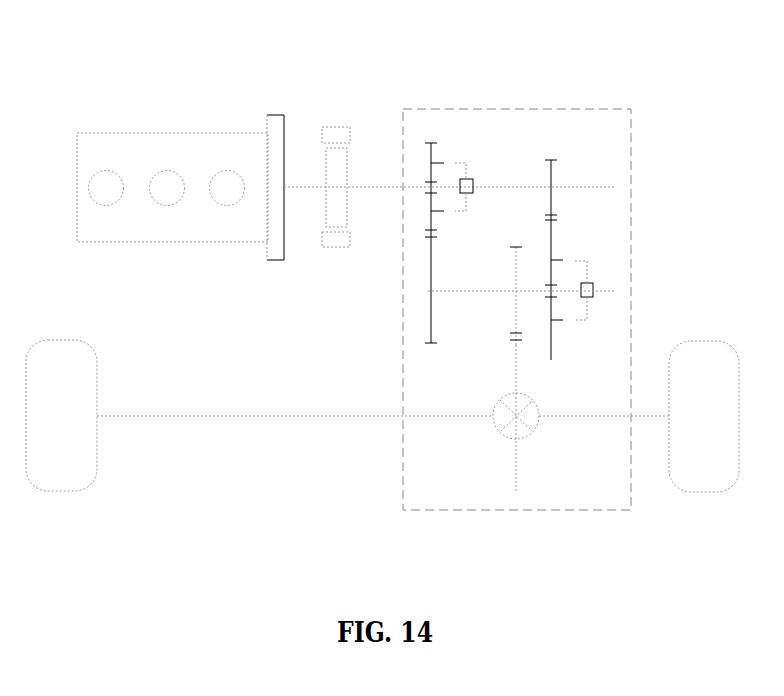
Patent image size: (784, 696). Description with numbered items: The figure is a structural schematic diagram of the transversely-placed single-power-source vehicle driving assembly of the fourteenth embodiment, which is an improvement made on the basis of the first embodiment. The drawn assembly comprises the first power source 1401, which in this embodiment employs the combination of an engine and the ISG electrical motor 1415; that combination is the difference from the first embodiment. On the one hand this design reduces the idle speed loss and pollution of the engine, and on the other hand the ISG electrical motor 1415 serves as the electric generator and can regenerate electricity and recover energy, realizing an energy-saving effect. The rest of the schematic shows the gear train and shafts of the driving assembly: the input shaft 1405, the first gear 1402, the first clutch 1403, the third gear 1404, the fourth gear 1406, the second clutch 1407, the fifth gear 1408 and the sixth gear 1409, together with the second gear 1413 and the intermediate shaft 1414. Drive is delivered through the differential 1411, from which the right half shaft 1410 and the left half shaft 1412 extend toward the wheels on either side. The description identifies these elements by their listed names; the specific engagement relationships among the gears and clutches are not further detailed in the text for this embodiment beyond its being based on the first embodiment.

The first power source 1401 is at (163, 147).
The first gear 1402 is at (431, 143).
The first clutch 1403 is at (467, 177).
The third gear 1404 is at (552, 160).
The input shaft 1405 is at (590, 187).
The fourth gear 1406 is at (552, 231).
The second clutch 1407 is at (588, 274).
The fifth gear 1408 is at (515, 313).
The sixth gear 1409 is at (516, 367).
The right half shaft 1410 is at (593, 416).
The differential 1411 is at (511, 428).
The left half shaft 1412 is at (377, 416).
The second gear 1413 is at (431, 338).
The intermediate shaft 1414 is at (428, 292).
The ISG electrical motor 1415 is at (340, 127).